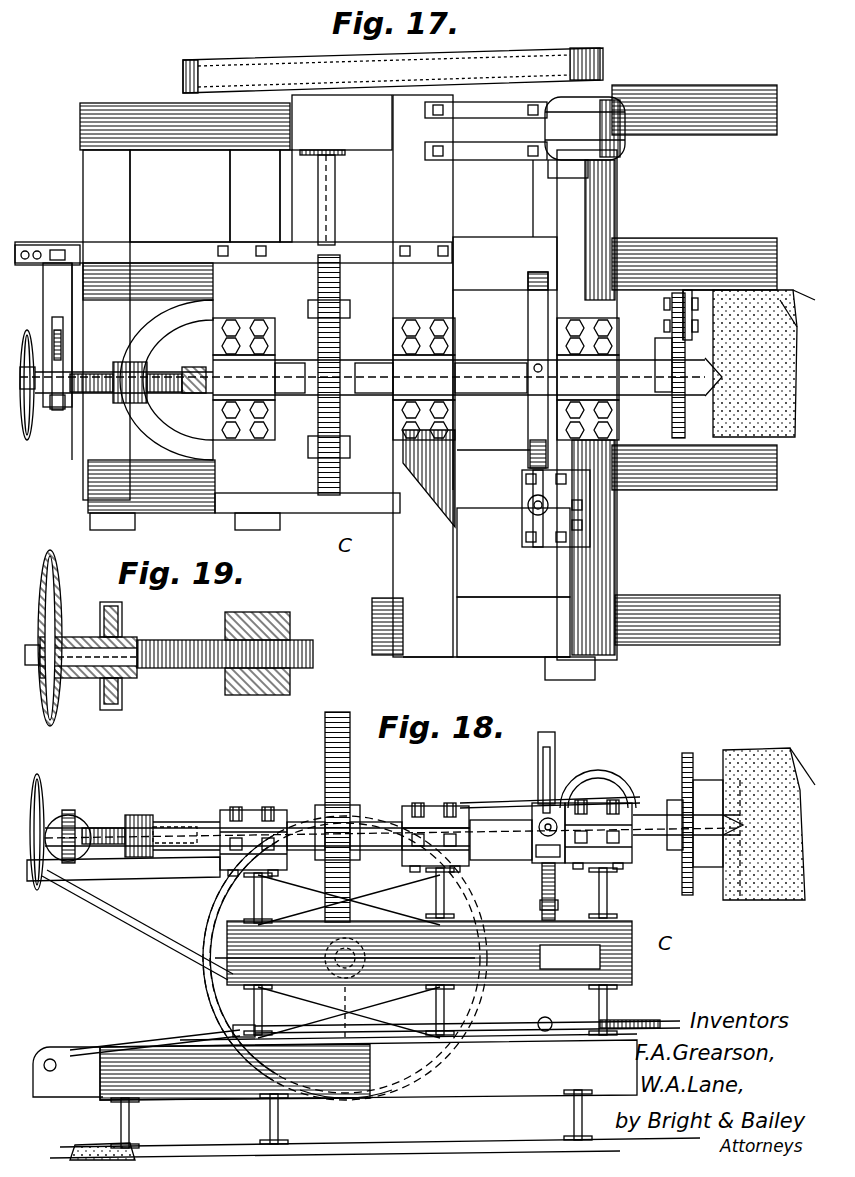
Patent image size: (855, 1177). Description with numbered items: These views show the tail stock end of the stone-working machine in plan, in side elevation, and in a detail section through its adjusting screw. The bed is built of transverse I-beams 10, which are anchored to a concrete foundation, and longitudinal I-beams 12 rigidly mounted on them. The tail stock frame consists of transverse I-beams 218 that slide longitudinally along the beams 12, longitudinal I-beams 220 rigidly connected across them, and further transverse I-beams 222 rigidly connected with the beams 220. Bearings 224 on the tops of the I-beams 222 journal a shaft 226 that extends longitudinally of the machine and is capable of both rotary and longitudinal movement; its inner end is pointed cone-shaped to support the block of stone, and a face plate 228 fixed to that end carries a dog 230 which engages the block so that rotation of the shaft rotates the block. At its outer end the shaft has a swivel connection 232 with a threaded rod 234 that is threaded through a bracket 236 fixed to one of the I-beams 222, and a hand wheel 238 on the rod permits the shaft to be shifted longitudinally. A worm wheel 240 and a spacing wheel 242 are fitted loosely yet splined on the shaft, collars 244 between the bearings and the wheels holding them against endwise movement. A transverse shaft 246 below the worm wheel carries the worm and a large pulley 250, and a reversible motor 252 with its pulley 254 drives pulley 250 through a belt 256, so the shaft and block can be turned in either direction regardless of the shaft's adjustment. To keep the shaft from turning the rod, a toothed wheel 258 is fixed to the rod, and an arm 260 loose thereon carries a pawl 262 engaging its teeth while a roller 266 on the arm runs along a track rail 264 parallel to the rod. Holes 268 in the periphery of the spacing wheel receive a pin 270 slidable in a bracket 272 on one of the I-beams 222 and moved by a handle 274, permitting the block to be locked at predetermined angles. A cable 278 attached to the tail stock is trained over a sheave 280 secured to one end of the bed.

In FIG. 18, the I-beams 10 is at (132, 1122).
In FIG. 17, the I-beams 12 is at (722, 240).
In FIG. 18, the I-beams 12 is at (368, 1070).
In FIG. 18, the I-beams 218 is at (255, 1012).
In FIG. 18, the I-beams 220 is at (429, 953).
In FIG. 17, the I-beams 222 is at (424, 376).
In FIG. 18, the I-beams 222 is at (610, 897).
In FIG. 17, the bearings 224 is at (630, 390).
In FIG. 18, the bearings 224 is at (255, 810).
In FIG. 17, the shaft 226 is at (657, 356).
In FIG. 18, the shaft 226 is at (672, 852).
In FIG. 17, the face plate 228 is at (690, 388).
In FIG. 18, the face plate 228 is at (692, 770).
In FIG. 17, the dog 230 is at (722, 300).
In FIG. 18, the dog 230 is at (718, 790).
In FIG. 17, the swivel connection 232 is at (193, 368).
In FIG. 17, the threaded rod 234 is at (172, 396).
In FIG. 19, the threaded rod 234 is at (200, 670).
In FIG. 18, the threaded rod 234 is at (110, 828).
In FIG. 19, the bracket 236 is at (290, 620).
In FIG. 18, the bracket 236 is at (150, 826).
In FIG. 17, the hand wheel 238 is at (33, 440).
In FIG. 19, the hand wheel 238 is at (60, 583).
In FIG. 18, the hand wheel 238 is at (37, 790).
In FIG. 17, the worm wheel 240 is at (340, 478).
In FIG. 18, the worm wheel 240 is at (326, 765).
In FIG. 17, the spacing wheel 242 is at (528, 318).
In FIG. 18, the spacing wheel 242 is at (550, 745).
In FIG. 17, the collars 244 is at (305, 396).
In FIG. 18, the collars 244 is at (380, 822).
In FIG. 17, the shaft 246 is at (335, 185).
In FIG. 18, the shaft 246 is at (348, 945).
In FIG. 17, the pulley 250 is at (222, 52).
In FIG. 18, the pulley 250 is at (210, 940).
In FIG. 17, the reversible motor 252 is at (585, 128).
In FIG. 18, the reversible motor 252 is at (612, 776).
In FIG. 17, the pulley 254 is at (592, 50).
In FIG. 17, the belt 256 is at (393, 70).
In FIG. 18, the belt 256 is at (505, 802).
In FIG. 17, the toothed wheel 258 is at (63, 410).
In FIG. 19, the toothed wheel 258 is at (115, 708).
In FIG. 18, the toothed wheel 258 is at (68, 878).
In FIG. 17, the arm 260 is at (48, 310).
In FIG. 19, the arm 260 is at (120, 632).
In FIG. 17, the pawl 262 is at (63, 350).
In FIG. 17, the track rail 264 is at (168, 250).
In FIG. 18, the track rail 264 is at (190, 878).
In FIG. 17, the roller 266 is at (42, 252).
In FIG. 18, the roller 266 is at (76, 815).
In FIG. 17, the holes 268 is at (530, 292).
In FIG. 18, the holes 268 is at (542, 905).
In FIG. 17, the pin 270 is at (532, 532).
In FIG. 18, the pin 270 is at (560, 830).
In FIG. 17, the bracket 272 is at (531, 494).
In FIG. 18, the bracket 272 is at (532, 858).
In FIG. 17, the handle 274 is at (556, 508).
In FIG. 18, the handle 274 is at (552, 778).
In FIG. 18, the cable 278 is at (103, 1047).
In FIG. 18, the sheave 280 is at (44, 1050).